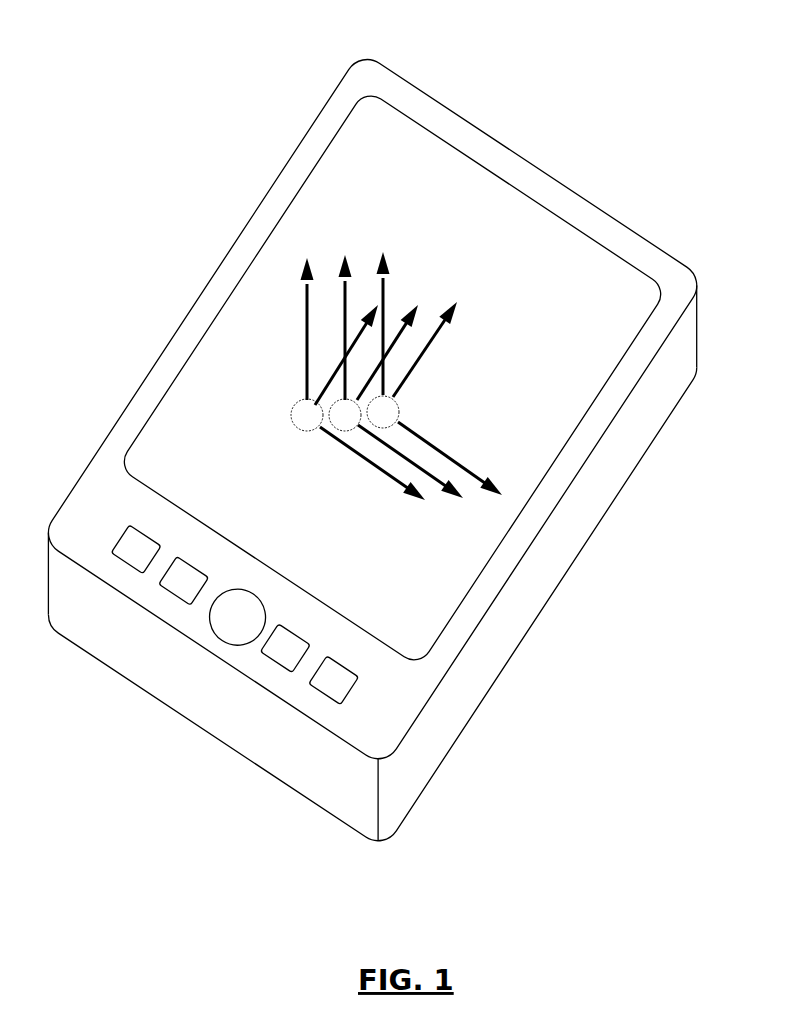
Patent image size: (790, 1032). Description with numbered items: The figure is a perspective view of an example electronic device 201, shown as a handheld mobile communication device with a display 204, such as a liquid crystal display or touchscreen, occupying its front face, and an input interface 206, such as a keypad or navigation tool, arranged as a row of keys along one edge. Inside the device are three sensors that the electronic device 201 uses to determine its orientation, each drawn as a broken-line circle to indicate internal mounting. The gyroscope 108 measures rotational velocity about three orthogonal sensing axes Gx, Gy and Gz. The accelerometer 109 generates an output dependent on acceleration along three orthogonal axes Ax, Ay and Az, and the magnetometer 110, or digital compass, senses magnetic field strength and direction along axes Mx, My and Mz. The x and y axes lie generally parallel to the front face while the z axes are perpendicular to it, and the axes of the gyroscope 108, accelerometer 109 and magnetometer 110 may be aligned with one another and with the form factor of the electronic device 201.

The electronic device 201 is at (438, 122).
The display 204 is at (266, 239).
The input interface 206 is at (130, 560).
The gyroscope 108 is at (298, 430).
The accelerometer 109 is at (347, 432).
The magnetometer 110 is at (402, 397).